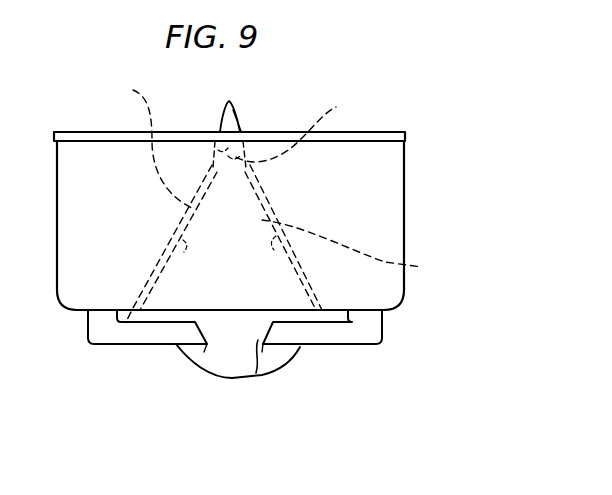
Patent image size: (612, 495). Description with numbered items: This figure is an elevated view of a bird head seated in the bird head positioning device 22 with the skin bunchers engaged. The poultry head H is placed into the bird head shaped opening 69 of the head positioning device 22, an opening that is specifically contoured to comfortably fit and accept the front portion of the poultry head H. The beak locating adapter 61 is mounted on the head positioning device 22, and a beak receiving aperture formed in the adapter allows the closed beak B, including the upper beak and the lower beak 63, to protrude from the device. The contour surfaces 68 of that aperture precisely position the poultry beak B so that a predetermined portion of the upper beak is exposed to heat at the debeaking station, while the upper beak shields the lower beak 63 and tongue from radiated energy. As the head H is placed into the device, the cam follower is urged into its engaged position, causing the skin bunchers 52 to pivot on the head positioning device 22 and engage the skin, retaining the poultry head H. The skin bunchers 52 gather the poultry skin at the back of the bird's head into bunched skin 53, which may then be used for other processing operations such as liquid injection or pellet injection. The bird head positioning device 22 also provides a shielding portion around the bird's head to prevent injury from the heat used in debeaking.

The bird head positioning device 22 is at (392, 187).
The beak locating adapter 61 is at (386, 132).
The lower beak 63 is at (234, 112).
The beak B is at (296, 130).
The poultry head H is at (352, 252).
The contour surfaces 68 is at (146, 142).
The bird head shaped opening 69 is at (126, 322).
The skin bunchers 52 is at (343, 337).
The bunched skin 53 is at (237, 380).